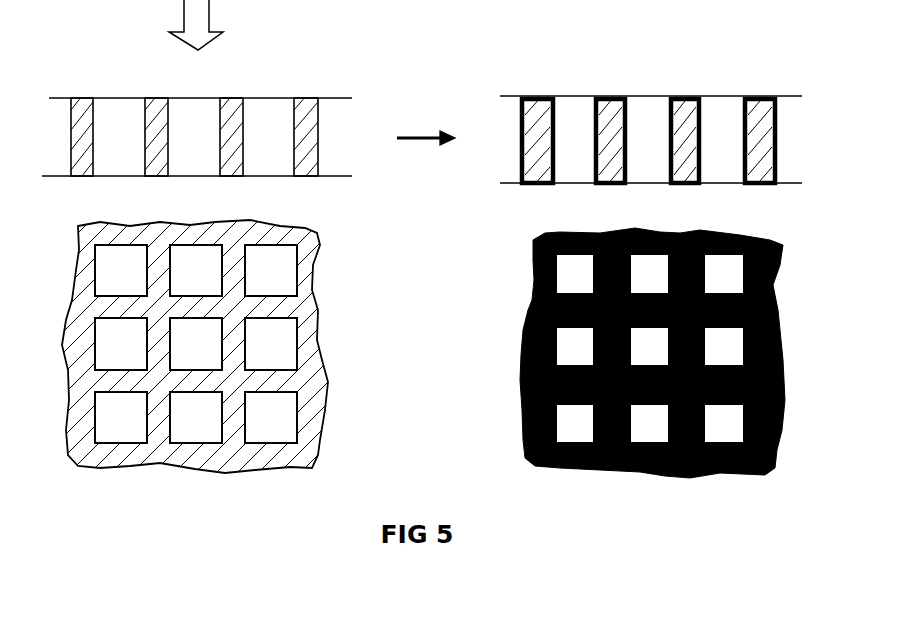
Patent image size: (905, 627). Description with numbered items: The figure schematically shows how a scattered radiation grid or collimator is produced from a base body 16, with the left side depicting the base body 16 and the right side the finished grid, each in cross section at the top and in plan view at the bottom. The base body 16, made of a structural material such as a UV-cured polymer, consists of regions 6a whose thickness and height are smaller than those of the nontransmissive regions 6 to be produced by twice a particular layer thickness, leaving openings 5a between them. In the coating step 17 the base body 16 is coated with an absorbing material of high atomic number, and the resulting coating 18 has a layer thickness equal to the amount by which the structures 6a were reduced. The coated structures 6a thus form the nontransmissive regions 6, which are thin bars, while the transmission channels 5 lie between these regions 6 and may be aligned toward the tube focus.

The coating step 17 is at (223, 25).
The base body 16 is at (352, 98).
The regions of the structural material 6a is at (233, 157).
The openings between precursor structures 5a is at (269, 154).
The nontransmissive regions 6 is at (683, 187).
The transmission channels 5 is at (575, 168).
The absorbing coating 18 is at (685, 97).